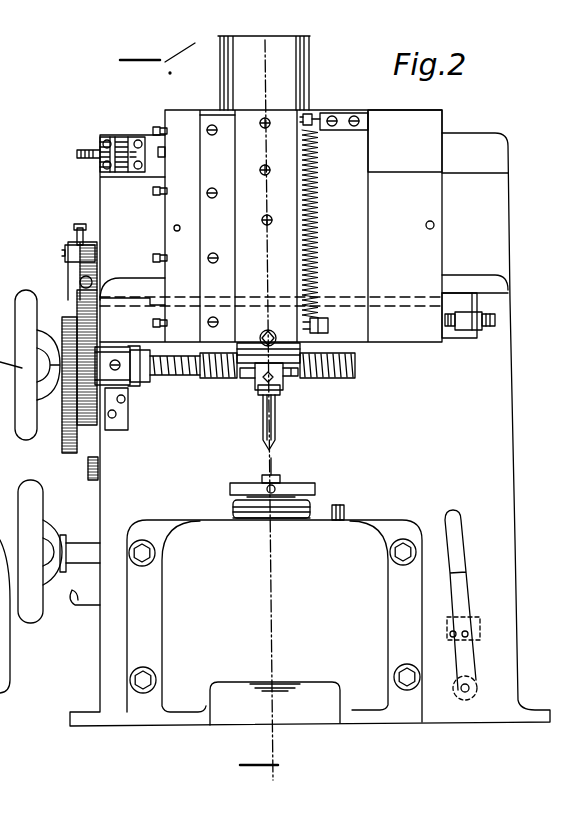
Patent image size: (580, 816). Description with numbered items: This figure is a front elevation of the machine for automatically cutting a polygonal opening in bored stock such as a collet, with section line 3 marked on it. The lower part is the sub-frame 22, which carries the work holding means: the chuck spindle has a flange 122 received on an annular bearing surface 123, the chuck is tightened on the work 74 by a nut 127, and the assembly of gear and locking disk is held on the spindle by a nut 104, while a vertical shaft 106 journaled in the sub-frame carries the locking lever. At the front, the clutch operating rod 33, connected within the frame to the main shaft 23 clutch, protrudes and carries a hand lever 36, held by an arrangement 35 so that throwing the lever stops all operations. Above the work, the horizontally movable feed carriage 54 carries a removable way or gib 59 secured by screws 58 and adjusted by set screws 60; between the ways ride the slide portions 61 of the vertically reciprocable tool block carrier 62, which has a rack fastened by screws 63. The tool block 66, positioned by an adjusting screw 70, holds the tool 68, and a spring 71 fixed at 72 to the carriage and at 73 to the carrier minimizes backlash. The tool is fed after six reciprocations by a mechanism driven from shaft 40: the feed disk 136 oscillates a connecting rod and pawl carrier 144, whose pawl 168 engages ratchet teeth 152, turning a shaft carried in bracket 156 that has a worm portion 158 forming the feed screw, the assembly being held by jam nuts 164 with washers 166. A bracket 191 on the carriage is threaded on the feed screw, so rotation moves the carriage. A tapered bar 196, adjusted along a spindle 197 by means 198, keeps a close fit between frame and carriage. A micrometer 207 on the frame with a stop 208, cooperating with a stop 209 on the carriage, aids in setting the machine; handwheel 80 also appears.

The section line 3- 3 is at (199, 414).
The sub-frame 22 is at (274, 622).
The main shaft 23 is at (79, 607).
The clutch operating rod 33 is at (461, 696).
The arrangement for maintaining the hand lever 35 is at (481, 631).
The hand lever 36 is at (470, 666).
The shaft 40 is at (77, 550).
The feed carriage 54 is at (366, 151).
The screws 58 is at (217, 313).
The removable way or gib 59 is at (213, 206).
The set screws 60 is at (153, 258).
The slide portions 61 is at (306, 63).
The tool block carrier 62 is at (255, 227).
The screws 63 is at (262, 175).
The tool block 66 is at (265, 380).
The tool 68 is at (277, 414).
The adjusting screw 70 is at (271, 333).
The spring 71 is at (318, 212).
The spring fixed end 72 is at (309, 118).
The spring end attachment 73 is at (320, 318).
The work 74 is at (279, 476).
The hand wheel 80 is at (36, 506).
The nut 104 is at (282, 701).
The vertical shaft 106 is at (345, 508).
The flange 122 is at (312, 506).
The annular bearing surface 123 is at (233, 512).
The nut 127 is at (316, 488).
The feed disk 136 is at (99, 465).
The pawl carrier 144 is at (70, 281).
The ratchet teeth 152 is at (80, 440).
The bracket 156 is at (122, 412).
The worm portion 158 is at (352, 366).
The jam nuts 164 is at (129, 385).
The washers 166 is at (70, 410).
The pawl 168 is at (85, 264).
The bracket 191 is at (288, 392).
The tapered bar 196 is at (456, 295).
The spindle 197 is at (489, 327).
The adjusting means 198 is at (470, 326).
The micrometer 207 is at (118, 163).
The stop 208 is at (152, 150).
The stop 209 is at (162, 155).